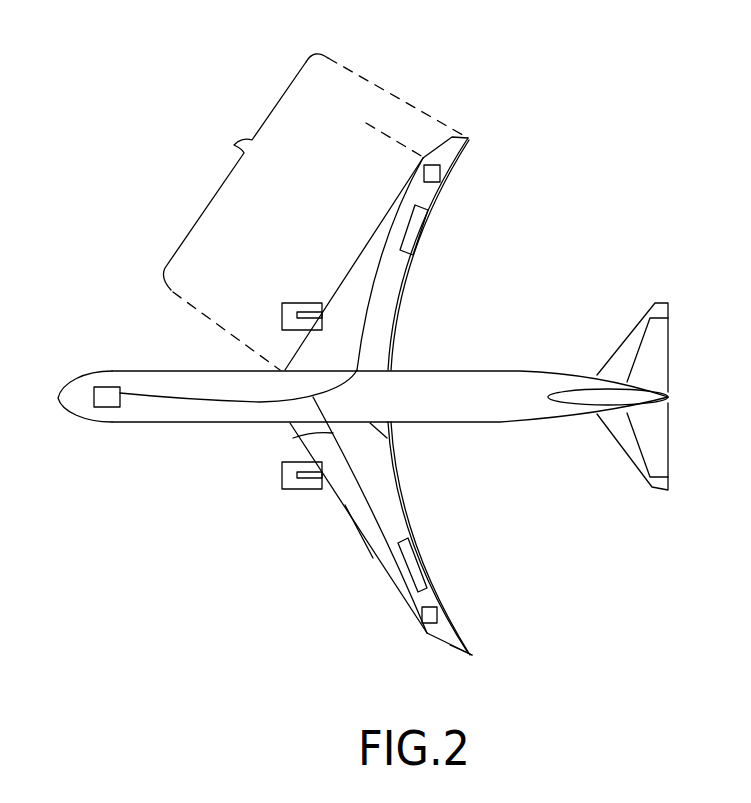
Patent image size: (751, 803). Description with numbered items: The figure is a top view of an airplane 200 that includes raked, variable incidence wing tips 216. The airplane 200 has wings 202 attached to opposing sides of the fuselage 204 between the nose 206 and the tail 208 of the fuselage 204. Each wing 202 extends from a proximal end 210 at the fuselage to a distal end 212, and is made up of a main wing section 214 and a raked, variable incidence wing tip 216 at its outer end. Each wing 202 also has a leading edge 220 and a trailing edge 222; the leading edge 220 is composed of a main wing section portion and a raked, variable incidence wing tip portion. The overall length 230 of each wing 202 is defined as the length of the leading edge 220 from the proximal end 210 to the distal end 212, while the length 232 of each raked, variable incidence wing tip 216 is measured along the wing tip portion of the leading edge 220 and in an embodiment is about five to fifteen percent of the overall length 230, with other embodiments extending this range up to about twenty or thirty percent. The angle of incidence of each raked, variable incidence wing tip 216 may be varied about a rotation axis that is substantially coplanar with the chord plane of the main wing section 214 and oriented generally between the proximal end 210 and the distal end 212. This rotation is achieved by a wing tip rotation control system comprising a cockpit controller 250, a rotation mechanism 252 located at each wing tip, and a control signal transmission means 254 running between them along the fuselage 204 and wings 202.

The airplane 200 is at (596, 214).
The wings 202 is at (397, 291).
The fuselage 204 is at (168, 412).
The nose 206 is at (65, 393).
The tail 208 is at (670, 392).
The proximal end 210 is at (393, 433).
The distal end 212 is at (465, 654).
The main wing section 214 is at (342, 293).
The raked, variable incidence wing tip 216 is at (450, 150).
The leading edge 220 is at (373, 558).
The trailing edge 222 is at (415, 525).
The overall length 230 is at (315, 212).
The length 232 is at (388, 92).
The cockpit controller 250 is at (103, 397).
The rotation mechanism 252 is at (443, 180).
The control signal transmission means 254 is at (362, 340).